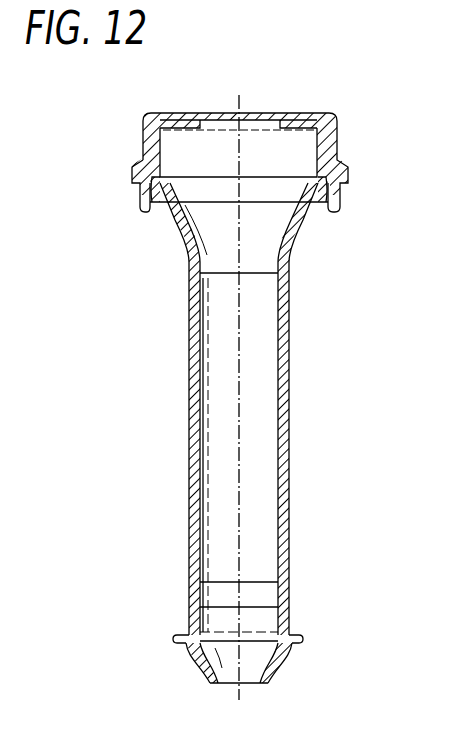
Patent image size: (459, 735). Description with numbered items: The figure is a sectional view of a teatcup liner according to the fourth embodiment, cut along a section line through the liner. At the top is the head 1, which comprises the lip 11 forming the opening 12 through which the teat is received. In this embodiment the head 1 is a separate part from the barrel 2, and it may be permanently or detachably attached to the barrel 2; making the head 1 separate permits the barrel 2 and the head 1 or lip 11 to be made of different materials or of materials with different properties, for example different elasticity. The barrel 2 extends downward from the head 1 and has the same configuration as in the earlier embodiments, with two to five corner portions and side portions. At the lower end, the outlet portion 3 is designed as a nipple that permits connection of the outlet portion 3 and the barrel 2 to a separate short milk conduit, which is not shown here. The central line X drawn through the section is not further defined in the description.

The head 1 is at (140, 150).
The lip 11 is at (285, 113).
The opening 12 is at (223, 113).
The barrel 2 is at (188, 342).
The outlet portion 3 is at (185, 650).
The axis X is at (238, 503).